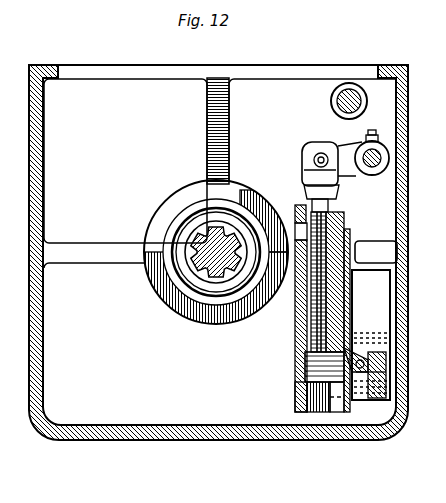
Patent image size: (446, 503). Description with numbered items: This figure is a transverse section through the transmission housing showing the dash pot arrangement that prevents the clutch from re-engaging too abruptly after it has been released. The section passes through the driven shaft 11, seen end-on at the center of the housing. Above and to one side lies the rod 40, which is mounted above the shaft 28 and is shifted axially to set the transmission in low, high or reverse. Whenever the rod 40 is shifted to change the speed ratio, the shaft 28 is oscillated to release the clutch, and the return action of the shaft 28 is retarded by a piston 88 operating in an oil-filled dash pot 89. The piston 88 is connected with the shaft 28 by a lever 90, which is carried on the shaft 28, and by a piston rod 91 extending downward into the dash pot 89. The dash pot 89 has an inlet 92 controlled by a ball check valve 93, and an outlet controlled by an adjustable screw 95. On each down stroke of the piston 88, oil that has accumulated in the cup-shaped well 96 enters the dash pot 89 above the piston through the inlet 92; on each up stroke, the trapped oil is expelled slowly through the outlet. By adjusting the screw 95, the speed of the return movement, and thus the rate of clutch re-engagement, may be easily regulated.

The driven shaft 11 is at (205, 231).
The rod 40 is at (340, 100).
The lever 90 is at (344, 145).
The shaft 28 is at (372, 167).
The adjustable screw 95 is at (298, 208).
The piston rod 91 is at (311, 300).
The dash pot 89 is at (305, 359).
The piston 88 is at (300, 378).
The cup-shaped well 96 is at (370, 272).
The inlet 92 is at (356, 360).
The ball check valve 93 is at (366, 368).